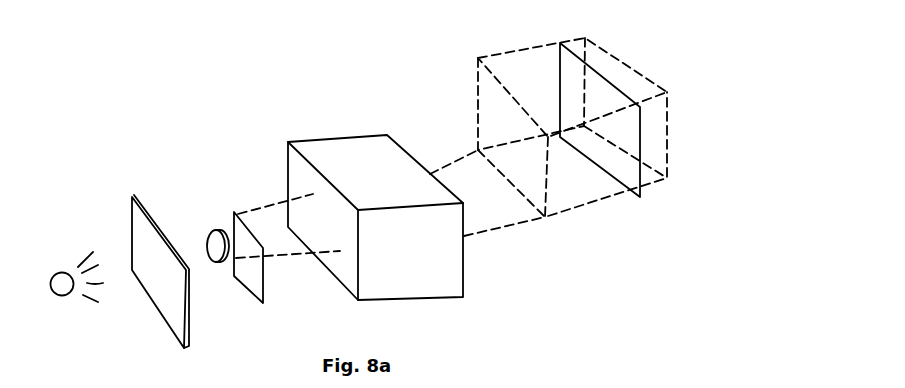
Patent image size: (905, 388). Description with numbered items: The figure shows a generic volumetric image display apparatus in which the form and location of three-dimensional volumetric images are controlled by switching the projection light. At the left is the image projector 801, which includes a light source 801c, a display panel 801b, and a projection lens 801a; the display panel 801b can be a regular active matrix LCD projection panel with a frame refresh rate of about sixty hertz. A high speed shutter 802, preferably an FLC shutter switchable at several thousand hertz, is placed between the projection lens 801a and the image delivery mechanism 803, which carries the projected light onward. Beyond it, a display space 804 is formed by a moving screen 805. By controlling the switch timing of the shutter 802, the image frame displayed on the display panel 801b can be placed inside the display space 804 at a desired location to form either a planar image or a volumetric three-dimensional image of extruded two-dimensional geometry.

The image projector 801 is at (233, 278).
The projection lens 801a is at (208, 226).
The display panel 801b is at (132, 190).
The light source 801c is at (62, 270).
The high speed shutter 802 is at (237, 208).
The image delivery mechanism 803 is at (358, 139).
The display space 804 is at (668, 178).
The moving screen 805 is at (567, 65).